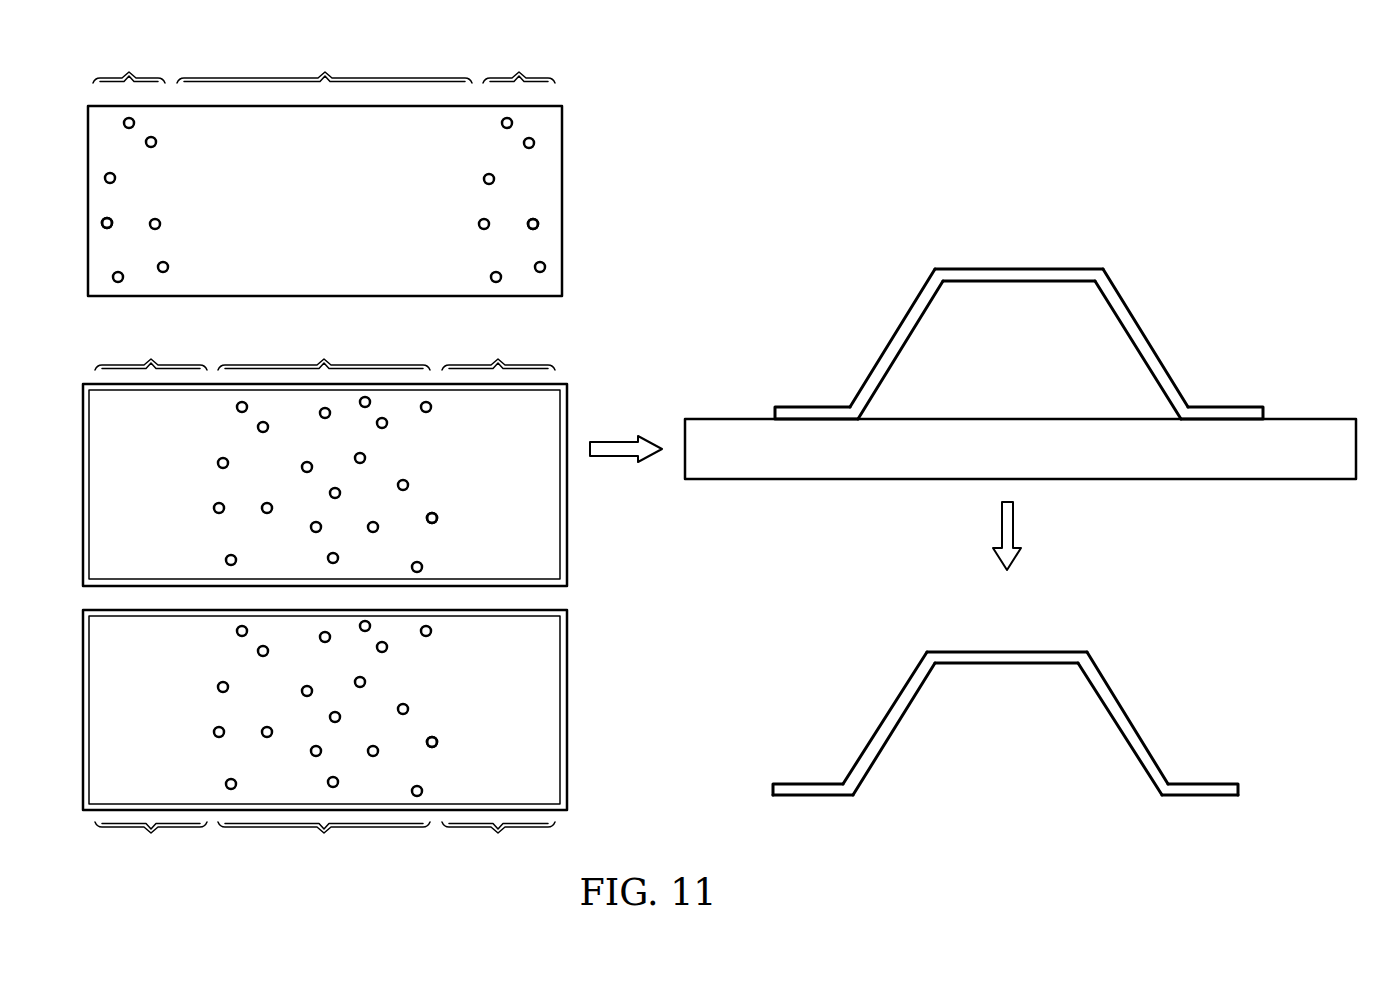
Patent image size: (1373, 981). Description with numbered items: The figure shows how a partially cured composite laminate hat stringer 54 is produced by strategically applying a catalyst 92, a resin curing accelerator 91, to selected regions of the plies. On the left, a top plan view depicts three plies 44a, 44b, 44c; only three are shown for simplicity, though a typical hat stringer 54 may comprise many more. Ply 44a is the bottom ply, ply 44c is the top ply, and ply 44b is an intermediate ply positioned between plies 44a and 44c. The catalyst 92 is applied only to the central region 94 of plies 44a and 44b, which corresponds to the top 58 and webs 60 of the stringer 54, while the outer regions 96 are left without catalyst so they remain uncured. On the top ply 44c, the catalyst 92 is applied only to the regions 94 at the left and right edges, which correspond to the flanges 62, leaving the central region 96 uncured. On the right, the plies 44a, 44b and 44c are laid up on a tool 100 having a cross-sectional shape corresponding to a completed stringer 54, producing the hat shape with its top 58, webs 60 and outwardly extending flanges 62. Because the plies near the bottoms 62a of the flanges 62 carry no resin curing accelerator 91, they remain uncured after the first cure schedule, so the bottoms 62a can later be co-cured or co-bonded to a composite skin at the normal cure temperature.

The bottom ply 44a is at (476, 695).
The intermediate ply 44b is at (476, 473).
The top ply 44c is at (303, 218).
The resin curing accelerator 91 is at (116, 212).
The catalyst 92 is at (161, 226).
The region 94 is at (324, 456).
The region 96 is at (325, 456).
The tool 100 is at (996, 400).
The hat stringer 54 is at (1010, 530).
The top 58 is at (1018, 269).
The webs 60 is at (893, 338).
The flanges 62 is at (812, 407).
The bottoms of the flanges 62a is at (806, 802).